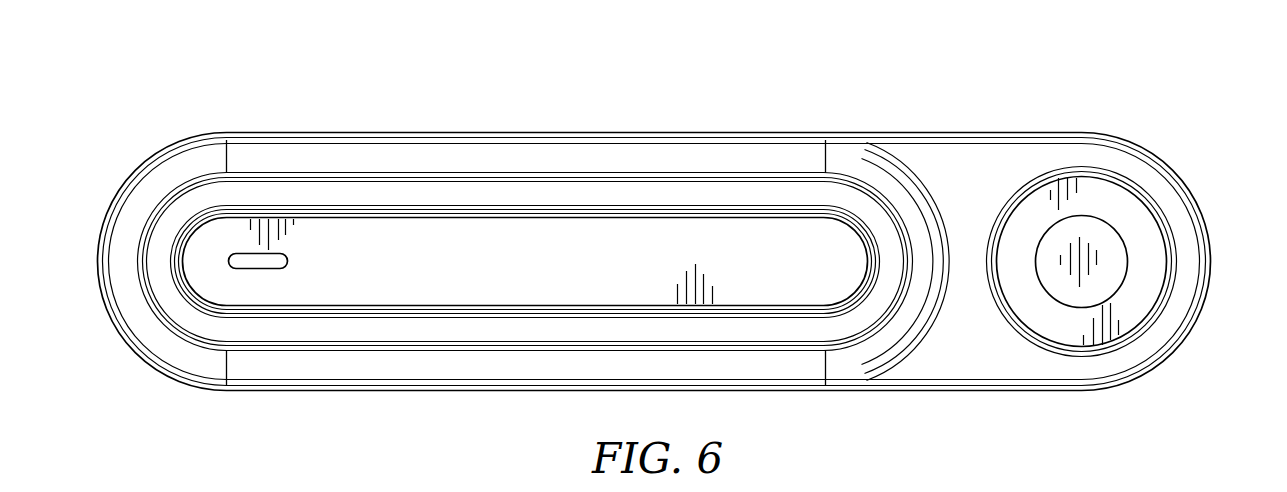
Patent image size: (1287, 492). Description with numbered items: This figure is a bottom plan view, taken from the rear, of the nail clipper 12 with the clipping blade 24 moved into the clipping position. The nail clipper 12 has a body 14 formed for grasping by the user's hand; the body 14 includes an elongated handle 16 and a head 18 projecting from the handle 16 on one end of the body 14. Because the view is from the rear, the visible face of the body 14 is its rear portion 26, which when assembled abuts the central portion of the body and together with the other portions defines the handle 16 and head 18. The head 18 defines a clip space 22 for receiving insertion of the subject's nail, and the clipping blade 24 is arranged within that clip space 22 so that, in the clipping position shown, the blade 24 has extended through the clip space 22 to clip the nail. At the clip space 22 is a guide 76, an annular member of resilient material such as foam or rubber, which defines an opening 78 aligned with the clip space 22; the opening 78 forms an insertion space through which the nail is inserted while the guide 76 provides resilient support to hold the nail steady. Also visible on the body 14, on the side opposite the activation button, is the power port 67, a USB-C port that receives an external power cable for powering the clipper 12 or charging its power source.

The nail clipper 12 is at (1004, 75).
The body 14 is at (721, 125).
The handle 16 is at (351, 359).
The head 18 is at (977, 362).
The clip space 22 is at (1126, 245).
The clipping blade 24 is at (1112, 274).
The rear portion 26 is at (275, 150).
The power port 67 is at (240, 250).
The guide 76 is at (1148, 263).
The opening 78 is at (1077, 288).